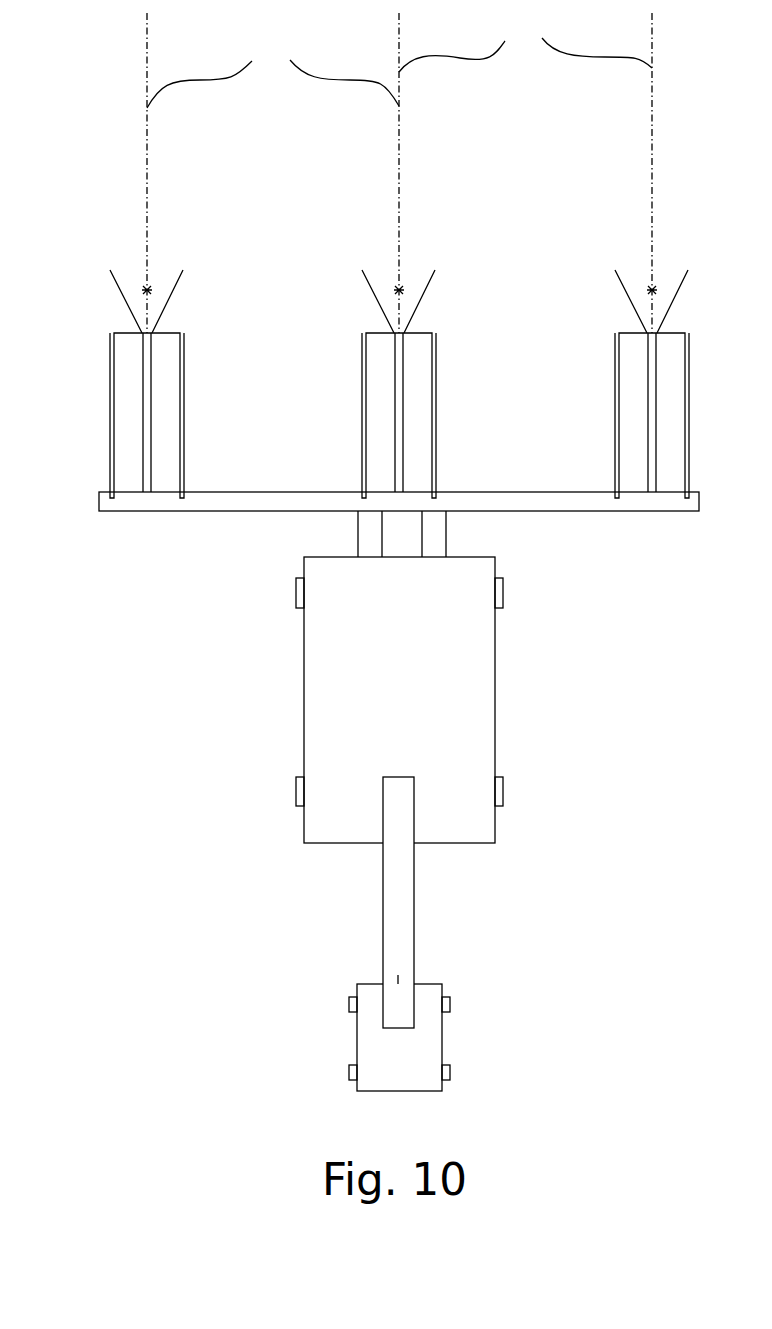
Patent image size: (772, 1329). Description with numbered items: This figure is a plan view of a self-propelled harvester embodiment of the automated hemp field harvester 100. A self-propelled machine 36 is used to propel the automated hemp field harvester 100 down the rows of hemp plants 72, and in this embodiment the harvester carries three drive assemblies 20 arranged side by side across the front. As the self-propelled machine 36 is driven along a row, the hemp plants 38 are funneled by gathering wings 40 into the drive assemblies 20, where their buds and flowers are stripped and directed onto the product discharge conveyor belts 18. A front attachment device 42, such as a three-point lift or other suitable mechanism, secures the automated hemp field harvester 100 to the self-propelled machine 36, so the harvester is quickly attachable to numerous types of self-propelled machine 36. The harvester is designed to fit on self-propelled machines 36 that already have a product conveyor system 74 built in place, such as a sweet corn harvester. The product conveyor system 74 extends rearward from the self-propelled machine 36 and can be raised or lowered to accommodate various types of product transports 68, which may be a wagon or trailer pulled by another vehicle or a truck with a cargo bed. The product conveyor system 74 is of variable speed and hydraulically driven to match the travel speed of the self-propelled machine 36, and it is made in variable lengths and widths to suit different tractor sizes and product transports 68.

The automated hemp field harvester 100 is at (300, 229).
The rows of hemp plants 72 is at (399, 173).
The product discharge conveyor belts 18 is at (110, 377).
The gathering wings 40 is at (124, 300).
The hemp plants 38 is at (150, 281).
The drive assemblies 20 is at (327, 474).
The front attachment device 42 is at (358, 520).
The self-propelled machine 36 is at (495, 668).
The product conveyor system 74 is at (415, 897).
The product transport 68 is at (442, 1036).